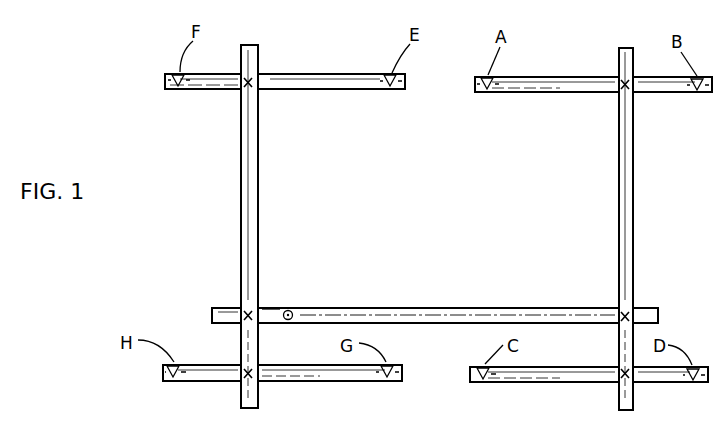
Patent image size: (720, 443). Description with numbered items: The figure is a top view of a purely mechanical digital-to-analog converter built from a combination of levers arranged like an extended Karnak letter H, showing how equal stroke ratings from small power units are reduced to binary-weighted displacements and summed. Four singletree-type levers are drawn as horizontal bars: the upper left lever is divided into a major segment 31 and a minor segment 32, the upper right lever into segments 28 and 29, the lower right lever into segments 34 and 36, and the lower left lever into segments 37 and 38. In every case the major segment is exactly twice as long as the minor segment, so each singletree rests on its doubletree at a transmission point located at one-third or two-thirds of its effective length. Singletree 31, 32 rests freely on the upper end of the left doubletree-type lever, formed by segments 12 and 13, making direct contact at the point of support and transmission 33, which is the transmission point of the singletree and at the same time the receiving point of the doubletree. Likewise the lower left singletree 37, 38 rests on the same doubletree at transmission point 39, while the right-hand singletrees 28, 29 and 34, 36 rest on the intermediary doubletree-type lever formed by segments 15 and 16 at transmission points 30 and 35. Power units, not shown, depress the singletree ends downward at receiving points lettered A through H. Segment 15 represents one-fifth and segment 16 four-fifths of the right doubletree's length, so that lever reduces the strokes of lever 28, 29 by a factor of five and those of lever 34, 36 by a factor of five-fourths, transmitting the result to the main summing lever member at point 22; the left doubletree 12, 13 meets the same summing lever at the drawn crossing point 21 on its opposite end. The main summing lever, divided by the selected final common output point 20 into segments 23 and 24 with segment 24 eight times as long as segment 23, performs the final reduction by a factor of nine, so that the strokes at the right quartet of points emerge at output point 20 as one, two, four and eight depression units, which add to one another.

The major segment of doubletree lever 12–13 12 is at (253, 150).
The minor segment of doubletree lever 12– 13 is at (243, 345).
The minor segment of doubletree lever 15–16 15 is at (622, 347).
The major segment of doubletree lever 15– 16 is at (627, 265).
The final common output point 20 is at (292, 315).
The junction of cross bar and first post 21 is at (246, 311).
The transmission point 22 is at (632, 316).
The minor segment of main summing lever 23 is at (268, 314).
The major segment of main summing lever 24 is at (538, 317).
The major segment of singletree lever 28–29 28 is at (522, 90).
The minor segment of singletree lever 28– 29 is at (660, 92).
The transmission point 30 is at (627, 94).
The major segment of singletree lever 31–32 31 is at (318, 92).
The minor segment of singletree lever 31– 32 is at (213, 92).
The point of support and transmission 33 is at (247, 92).
The major segment of singletree lever 34–36 34 is at (540, 379).
The transmission point 35 is at (620, 383).
The minor segment of singletree lever 34– 36 is at (665, 379).
The major segment of singletree lever 37–38 37 is at (337, 373).
The minor segment of singletree lever 37– 38 is at (227, 369).
The transmission point 39 is at (258, 375).